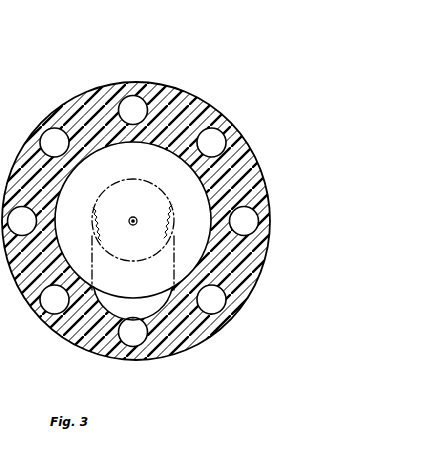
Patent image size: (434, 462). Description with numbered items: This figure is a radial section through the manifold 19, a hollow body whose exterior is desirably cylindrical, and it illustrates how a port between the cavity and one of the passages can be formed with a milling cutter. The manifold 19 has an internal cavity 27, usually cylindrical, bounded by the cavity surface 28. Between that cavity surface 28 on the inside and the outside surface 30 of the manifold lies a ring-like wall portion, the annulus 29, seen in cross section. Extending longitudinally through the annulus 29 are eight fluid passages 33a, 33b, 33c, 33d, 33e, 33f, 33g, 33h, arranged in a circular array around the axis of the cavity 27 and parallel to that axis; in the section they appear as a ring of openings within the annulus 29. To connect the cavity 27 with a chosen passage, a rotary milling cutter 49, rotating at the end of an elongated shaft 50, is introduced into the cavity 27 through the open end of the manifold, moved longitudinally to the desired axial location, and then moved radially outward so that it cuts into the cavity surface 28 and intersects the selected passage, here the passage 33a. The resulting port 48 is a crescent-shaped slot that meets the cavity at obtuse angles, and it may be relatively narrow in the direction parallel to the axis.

The manifold 19 is at (150, 210).
The internal cavity 27 is at (177, 231).
The surface of internal cavity 28 is at (190, 194).
The annular wall portion 29 is at (178, 117).
The outside surface 30 is at (250, 137).
The fluid passage 33a is at (135, 340).
The fluid passage 33b is at (50, 312).
The fluid passage 33c is at (22, 221).
The fluid passage 33d is at (52, 136).
The fluid passage 33e is at (135, 104).
The fluid passage 33f is at (220, 128).
The fluid passage 33g is at (248, 219).
The fluid passage 33h is at (218, 300).
The port 48 is at (165, 310).
The milling cutter 49 is at (92, 222).
The elongated shaft 50 is at (143, 207).